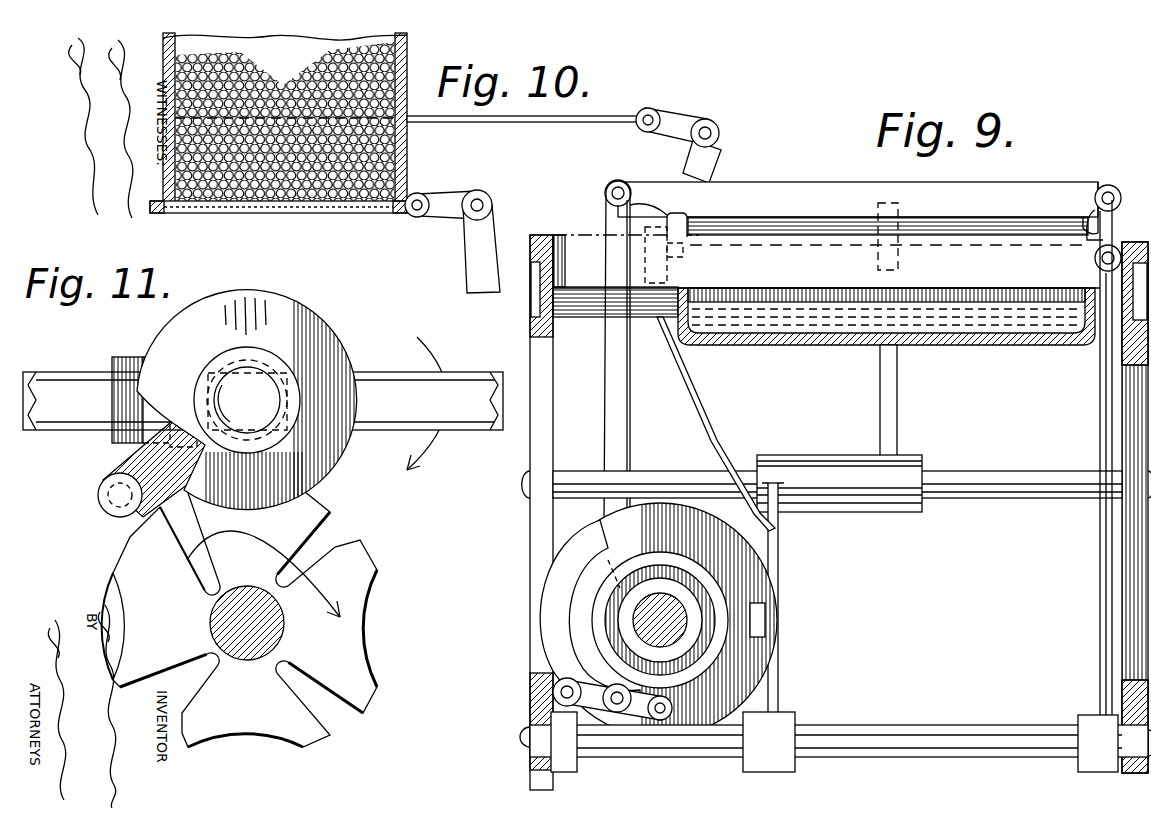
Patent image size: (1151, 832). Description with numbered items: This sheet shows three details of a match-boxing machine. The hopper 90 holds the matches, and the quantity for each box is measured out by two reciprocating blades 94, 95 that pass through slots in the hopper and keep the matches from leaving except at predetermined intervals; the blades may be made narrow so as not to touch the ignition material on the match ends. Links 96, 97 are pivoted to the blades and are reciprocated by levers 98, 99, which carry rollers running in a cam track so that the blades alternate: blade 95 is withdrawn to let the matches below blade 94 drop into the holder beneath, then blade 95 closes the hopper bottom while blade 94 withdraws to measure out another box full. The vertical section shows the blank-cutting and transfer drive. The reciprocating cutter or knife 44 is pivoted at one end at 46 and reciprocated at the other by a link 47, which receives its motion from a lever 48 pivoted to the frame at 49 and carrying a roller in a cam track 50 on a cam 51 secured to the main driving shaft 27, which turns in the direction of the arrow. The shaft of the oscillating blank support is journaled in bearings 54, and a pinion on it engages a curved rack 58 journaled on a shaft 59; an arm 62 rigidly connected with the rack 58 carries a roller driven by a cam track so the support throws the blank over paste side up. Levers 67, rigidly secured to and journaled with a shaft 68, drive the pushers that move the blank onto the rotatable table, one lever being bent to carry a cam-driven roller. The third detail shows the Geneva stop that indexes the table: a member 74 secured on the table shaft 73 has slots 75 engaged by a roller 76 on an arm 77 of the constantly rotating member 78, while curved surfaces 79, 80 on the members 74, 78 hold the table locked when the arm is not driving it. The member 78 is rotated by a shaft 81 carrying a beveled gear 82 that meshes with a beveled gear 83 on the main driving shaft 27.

In FIG. 10, the hopper 90 is at (161, 190).
In FIG. 10, the reciprocating blade 95 is at (354, 209).
In FIG. 10, the reciprocating blade 94 is at (529, 123).
In FIG. 10, the link 96 is at (662, 115).
In FIG. 10, the lever 98 is at (721, 150).
In FIG. 10, the link 97 is at (440, 197).
In FIG. 10, the lever 99 is at (491, 233).
In FIG. 9, the reciprocating cutter or knife 44 is at (1040, 196).
In FIG. 9, the curved rack 58 is at (888, 213).
In FIG. 9, the pivot 46 is at (1118, 199).
In FIG. 9, the bearings 54 is at (662, 222).
In FIG. 9, the link 47 is at (620, 452).
In FIG. 9, the shaft 59 is at (981, 474).
In FIG. 9, the arm 62 is at (780, 539).
In FIG. 9, the levers 67 is at (716, 420).
In FIG. 9, the cam track 50 is at (720, 583).
In FIG. 9, the cam 51 is at (590, 611).
In FIG. 9, the main driving shaft 27 is at (688, 623).
In FIG. 11, the main driving shaft 27 is at (462, 373).
In FIG. 9, the pivot 49 is at (553, 697).
In FIG. 9, the lever 48 is at (592, 702).
In FIG. 9, the shaft 68 is at (896, 757).
In FIG. 11, the beveled gear 83 is at (193, 338).
In FIG. 11, the arm 77 is at (147, 454).
In FIG. 11, the curved surface 80 is at (270, 292).
In FIG. 11, the beveled gear 82 is at (237, 307).
In FIG. 11, the constantly rotating member 78 is at (307, 329).
In FIG. 11, the shaft 81 is at (258, 396).
In FIG. 11, the roller 76 is at (98, 493).
In FIG. 11, the Geneva stop member 74 is at (362, 583).
In FIG. 11, the slots 75 is at (130, 535).
In FIG. 11, the curved surfaces 79 is at (201, 500).
In FIG. 11, the shaft 73 is at (338, 692).